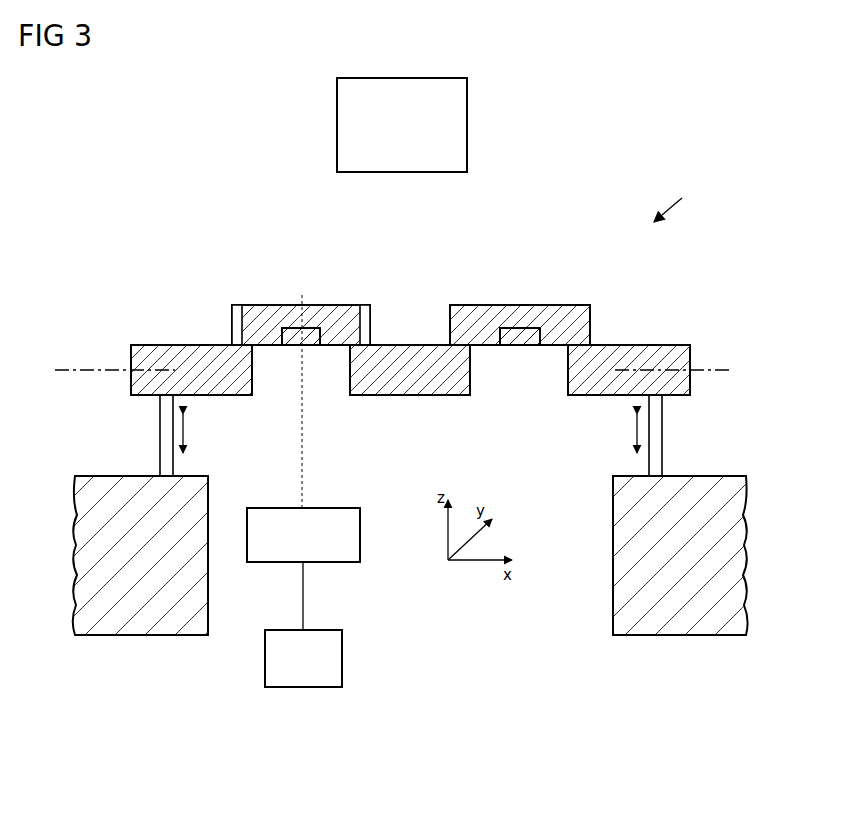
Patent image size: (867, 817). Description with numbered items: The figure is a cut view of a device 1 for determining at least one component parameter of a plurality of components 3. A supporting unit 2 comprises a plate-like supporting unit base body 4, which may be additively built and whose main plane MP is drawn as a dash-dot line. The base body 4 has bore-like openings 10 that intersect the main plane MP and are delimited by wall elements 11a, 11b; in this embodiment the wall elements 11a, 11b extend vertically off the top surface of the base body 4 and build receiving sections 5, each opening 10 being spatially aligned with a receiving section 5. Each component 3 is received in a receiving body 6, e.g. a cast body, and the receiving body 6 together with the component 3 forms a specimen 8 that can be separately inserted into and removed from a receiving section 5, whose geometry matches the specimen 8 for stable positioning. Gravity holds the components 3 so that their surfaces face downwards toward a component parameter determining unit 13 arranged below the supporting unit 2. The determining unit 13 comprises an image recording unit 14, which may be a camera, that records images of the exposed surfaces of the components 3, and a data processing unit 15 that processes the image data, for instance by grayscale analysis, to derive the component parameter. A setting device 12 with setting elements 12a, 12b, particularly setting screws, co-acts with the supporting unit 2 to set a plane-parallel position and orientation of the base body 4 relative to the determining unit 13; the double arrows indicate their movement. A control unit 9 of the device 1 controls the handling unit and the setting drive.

The device 1 is at (236, 695).
The supporting unit 2 is at (90, 250).
The component 3 is at (308, 347).
The plate-like supporting unit base body 4 is at (164, 345).
The receiving section 5 is at (336, 398).
The receiving body 6 is at (272, 305).
The specimen 8 is at (310, 270).
The control unit 9 is at (467, 125).
The opening 10 is at (281, 398).
The wall element 11a is at (237, 305).
The wall element 11b is at (364, 305).
The setting device 12 is at (592, 428).
The setting element 12a is at (160, 428).
The setting element 12b is at (662, 430).
The component parameter determining unit 13 is at (416, 598).
The image recording unit 14 is at (360, 533).
The data processing unit 15 is at (342, 657).
The main plane MP is at (70, 368).